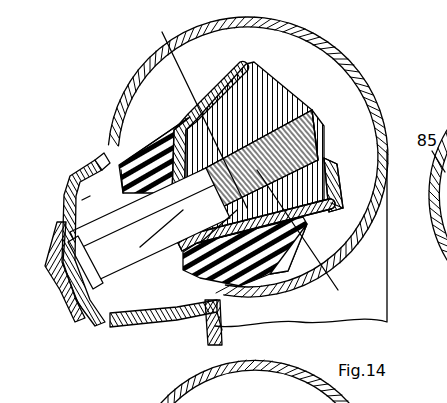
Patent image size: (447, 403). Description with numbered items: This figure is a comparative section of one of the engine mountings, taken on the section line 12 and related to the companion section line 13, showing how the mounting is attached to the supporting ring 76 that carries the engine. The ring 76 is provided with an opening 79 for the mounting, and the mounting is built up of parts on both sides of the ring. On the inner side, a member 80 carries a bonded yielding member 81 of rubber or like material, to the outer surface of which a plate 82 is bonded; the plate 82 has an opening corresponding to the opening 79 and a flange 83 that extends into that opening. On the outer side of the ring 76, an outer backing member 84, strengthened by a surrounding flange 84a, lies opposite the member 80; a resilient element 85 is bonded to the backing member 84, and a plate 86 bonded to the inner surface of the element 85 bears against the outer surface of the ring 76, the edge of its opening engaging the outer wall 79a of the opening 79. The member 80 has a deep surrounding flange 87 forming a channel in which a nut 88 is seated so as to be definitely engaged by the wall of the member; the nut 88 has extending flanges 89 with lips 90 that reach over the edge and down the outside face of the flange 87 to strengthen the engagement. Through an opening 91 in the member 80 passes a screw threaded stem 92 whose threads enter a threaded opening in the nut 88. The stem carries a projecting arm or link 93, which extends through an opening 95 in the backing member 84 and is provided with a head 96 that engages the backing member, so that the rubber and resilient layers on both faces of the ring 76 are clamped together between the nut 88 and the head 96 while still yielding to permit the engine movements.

The section line 12- 12 is at (143, 38).
The section line 13- 13 is at (301, 130).
The ring 76 is at (308, 35).
The opening 79 is at (70, 175).
The outer wall of the opening 79a is at (90, 163).
The member 80 is at (177, 148).
The yielding member 81 is at (172, 128).
The plate 82 is at (119, 172).
The flange 83 is at (97, 195).
The outer backing member 84 is at (163, 333).
The surrounding flange 84a is at (219, 327).
The resilient element 85 is at (208, 325).
The plate 86 is at (210, 295).
The surrounding flange 87 is at (217, 90).
The nut 88 is at (314, 173).
The extending flanges 89 is at (351, 200).
The lips 90 is at (345, 214).
The opening 91 is at (147, 203).
The screw threaded projection or stem 92 is at (274, 110).
The projecting arm or link 93 is at (147, 270).
The opening 95 is at (113, 307).
The head 96 is at (57, 241).